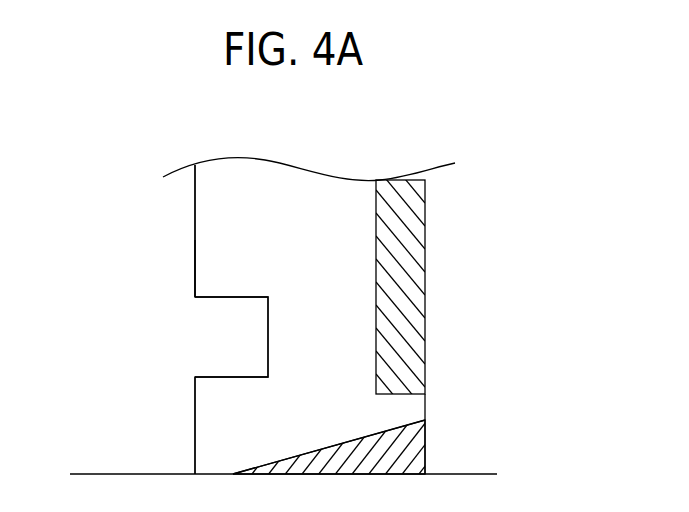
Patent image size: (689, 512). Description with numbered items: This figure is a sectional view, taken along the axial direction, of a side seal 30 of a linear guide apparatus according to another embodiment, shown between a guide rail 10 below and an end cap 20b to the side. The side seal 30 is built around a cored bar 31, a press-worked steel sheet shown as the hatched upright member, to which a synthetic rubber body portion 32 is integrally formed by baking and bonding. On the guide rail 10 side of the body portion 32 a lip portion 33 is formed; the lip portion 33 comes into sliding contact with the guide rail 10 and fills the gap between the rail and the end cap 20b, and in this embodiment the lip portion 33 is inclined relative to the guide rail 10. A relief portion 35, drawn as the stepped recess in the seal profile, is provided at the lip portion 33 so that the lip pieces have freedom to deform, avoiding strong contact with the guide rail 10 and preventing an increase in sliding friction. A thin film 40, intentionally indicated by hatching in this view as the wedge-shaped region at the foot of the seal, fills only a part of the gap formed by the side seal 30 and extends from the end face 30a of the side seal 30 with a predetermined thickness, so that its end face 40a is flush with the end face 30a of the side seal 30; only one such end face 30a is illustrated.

The guide rail 10 is at (158, 474).
The end cap 20b is at (495, 225).
The side seal 30 is at (157, 214).
The end face of side seal 30a is at (222, 275).
The cored bar 31 is at (405, 288).
The body portion 32 is at (194, 238).
The lip portion 33 is at (208, 402).
The relief portion 35 is at (216, 345).
The thin film 40 is at (432, 460).
The end face of thin film 40a is at (412, 452).